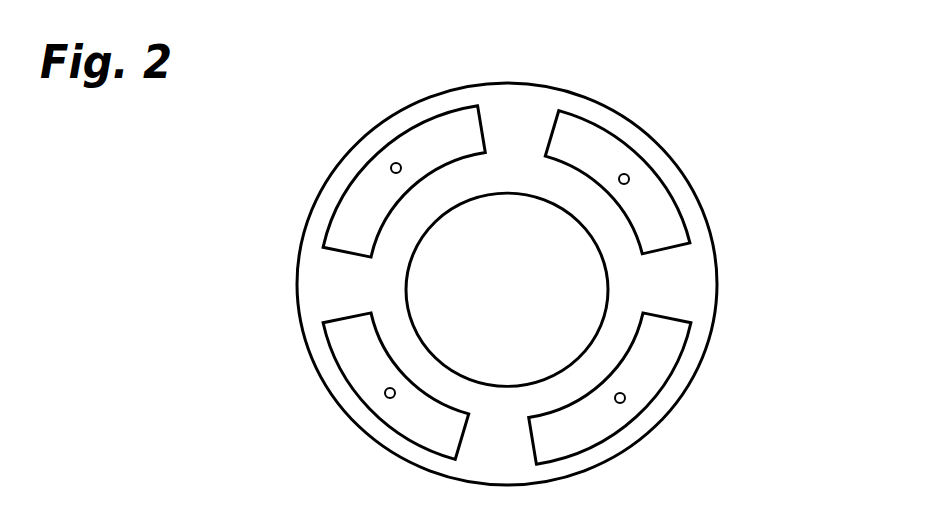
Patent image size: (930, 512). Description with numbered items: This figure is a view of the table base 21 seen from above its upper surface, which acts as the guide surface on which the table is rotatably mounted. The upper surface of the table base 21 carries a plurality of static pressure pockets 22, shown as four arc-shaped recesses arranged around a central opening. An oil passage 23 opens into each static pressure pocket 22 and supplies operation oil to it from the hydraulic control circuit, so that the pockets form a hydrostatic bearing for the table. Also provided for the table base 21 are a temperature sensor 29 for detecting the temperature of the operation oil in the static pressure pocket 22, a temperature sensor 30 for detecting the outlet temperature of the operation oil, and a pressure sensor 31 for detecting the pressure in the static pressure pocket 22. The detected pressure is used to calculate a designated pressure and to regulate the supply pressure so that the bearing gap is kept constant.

The table base 21 is at (688, 285).
The static pressure pocket 22 is at (342, 225).
The oil passage 23 is at (626, 404).
The temperature sensor 29 is at (400, 147).
The temperature sensor 30 is at (362, 147).
The pressure sensor 31 is at (363, 195).